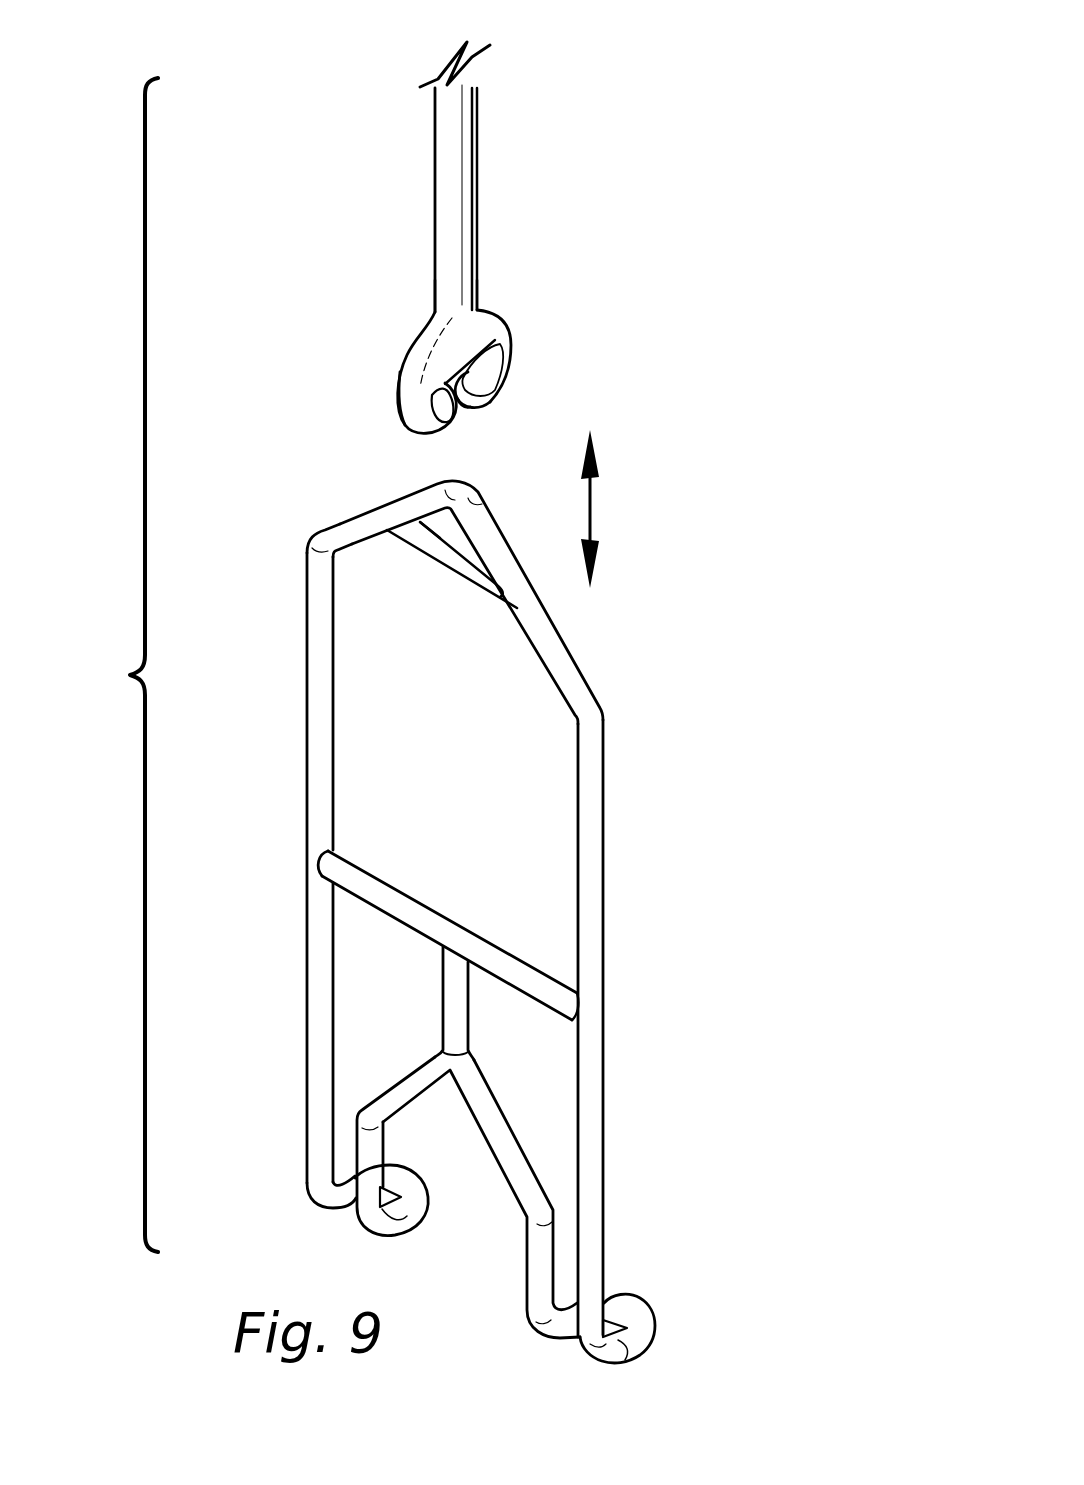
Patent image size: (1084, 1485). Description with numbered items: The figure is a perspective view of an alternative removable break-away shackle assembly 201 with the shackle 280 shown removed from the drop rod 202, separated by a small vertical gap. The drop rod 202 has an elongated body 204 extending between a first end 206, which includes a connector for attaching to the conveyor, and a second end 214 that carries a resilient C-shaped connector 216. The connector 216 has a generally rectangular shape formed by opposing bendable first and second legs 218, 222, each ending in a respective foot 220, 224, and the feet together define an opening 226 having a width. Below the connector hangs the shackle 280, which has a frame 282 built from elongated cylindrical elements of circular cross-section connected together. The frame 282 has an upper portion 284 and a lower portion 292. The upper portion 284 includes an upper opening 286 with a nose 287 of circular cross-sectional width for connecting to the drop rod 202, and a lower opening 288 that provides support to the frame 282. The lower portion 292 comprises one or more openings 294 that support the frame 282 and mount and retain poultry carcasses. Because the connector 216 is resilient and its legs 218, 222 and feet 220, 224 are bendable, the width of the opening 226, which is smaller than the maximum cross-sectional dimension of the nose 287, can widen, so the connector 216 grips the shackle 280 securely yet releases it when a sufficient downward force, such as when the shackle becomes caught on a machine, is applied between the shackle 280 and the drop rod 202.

The removable break-away shackle assembly 201 is at (313, 256).
The drop rod 202 is at (548, 188).
The elongated body 204 is at (477, 163).
The first end 206 is at (480, 62).
The second end 214 is at (477, 305).
The resilient C-shaped connector 216 is at (413, 352).
The first leg 218 is at (393, 400).
The foot of first leg 220 is at (447, 427).
The second leg 222 is at (510, 320).
The foot of second leg 224 is at (472, 407).
The opening 226 is at (462, 403).
The shackle 280 is at (660, 900).
The frame 282 is at (315, 545).
The upper portion 284 is at (380, 510).
The upper opening 286 is at (453, 533).
The nose 287 is at (420, 523).
The lower opening 288 is at (332, 817).
The lower portion 292 is at (603, 1013).
The openings 294 is at (333, 1023).